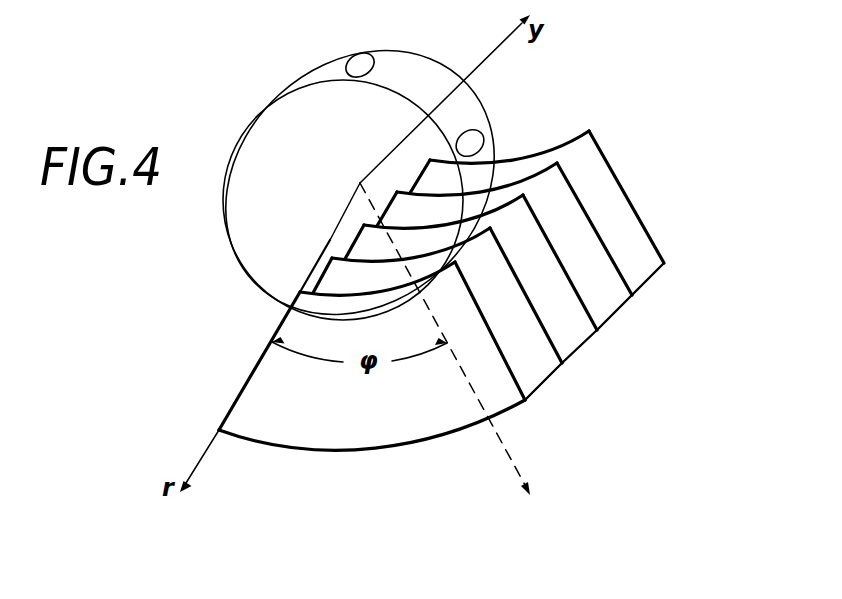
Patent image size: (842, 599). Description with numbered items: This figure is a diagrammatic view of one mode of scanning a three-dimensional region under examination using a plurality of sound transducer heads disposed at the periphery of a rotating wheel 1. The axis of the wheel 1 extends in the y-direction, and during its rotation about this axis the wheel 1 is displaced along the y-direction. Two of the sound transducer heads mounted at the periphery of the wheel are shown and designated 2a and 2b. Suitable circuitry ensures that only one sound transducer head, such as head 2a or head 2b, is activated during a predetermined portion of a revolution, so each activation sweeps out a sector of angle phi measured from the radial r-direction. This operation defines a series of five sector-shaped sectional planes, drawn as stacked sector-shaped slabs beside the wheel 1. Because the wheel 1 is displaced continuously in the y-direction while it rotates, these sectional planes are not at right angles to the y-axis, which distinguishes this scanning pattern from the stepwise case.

The rotating wheel 1 is at (243, 155).
The sound transducer head 2a is at (362, 62).
The sound transducer head 2b is at (477, 138).